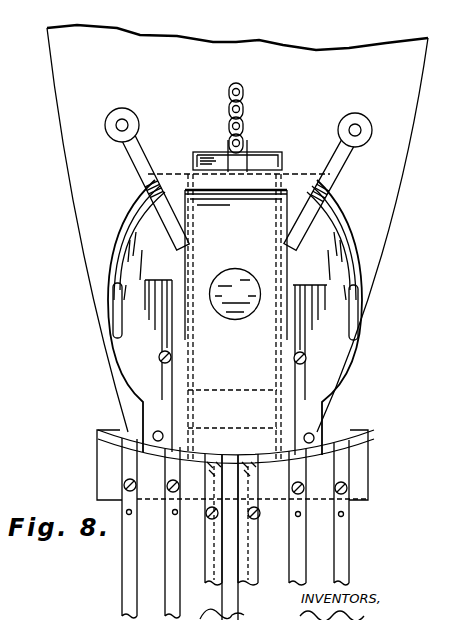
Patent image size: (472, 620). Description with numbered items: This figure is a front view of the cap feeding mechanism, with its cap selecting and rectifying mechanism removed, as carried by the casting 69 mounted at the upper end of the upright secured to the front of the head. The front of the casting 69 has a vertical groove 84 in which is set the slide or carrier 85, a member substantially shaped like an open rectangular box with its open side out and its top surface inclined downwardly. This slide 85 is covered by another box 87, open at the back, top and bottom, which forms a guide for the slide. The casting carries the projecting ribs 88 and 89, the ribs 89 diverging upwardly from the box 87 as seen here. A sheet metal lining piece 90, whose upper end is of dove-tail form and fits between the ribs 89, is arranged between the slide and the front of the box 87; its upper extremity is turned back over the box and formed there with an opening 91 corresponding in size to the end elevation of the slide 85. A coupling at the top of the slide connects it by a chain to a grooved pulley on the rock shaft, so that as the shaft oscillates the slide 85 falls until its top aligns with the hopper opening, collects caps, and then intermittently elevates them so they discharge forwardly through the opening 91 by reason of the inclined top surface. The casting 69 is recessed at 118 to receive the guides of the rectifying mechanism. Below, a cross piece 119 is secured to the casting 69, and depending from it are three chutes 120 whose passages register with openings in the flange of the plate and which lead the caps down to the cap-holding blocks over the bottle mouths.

The casting 69 is at (368, 289).
The vertical groove 84 is at (170, 414).
The slide or carrier 85 is at (283, 161).
The box 87 is at (236, 318).
The projecting rib 88 is at (129, 356).
The projecting ribs 89 is at (344, 173).
The sheet metal lining piece 90 is at (160, 164).
The opening 91 is at (191, 172).
The recess 118 is at (345, 255).
The cross piece 119 is at (360, 477).
The chutes 120 is at (345, 553).